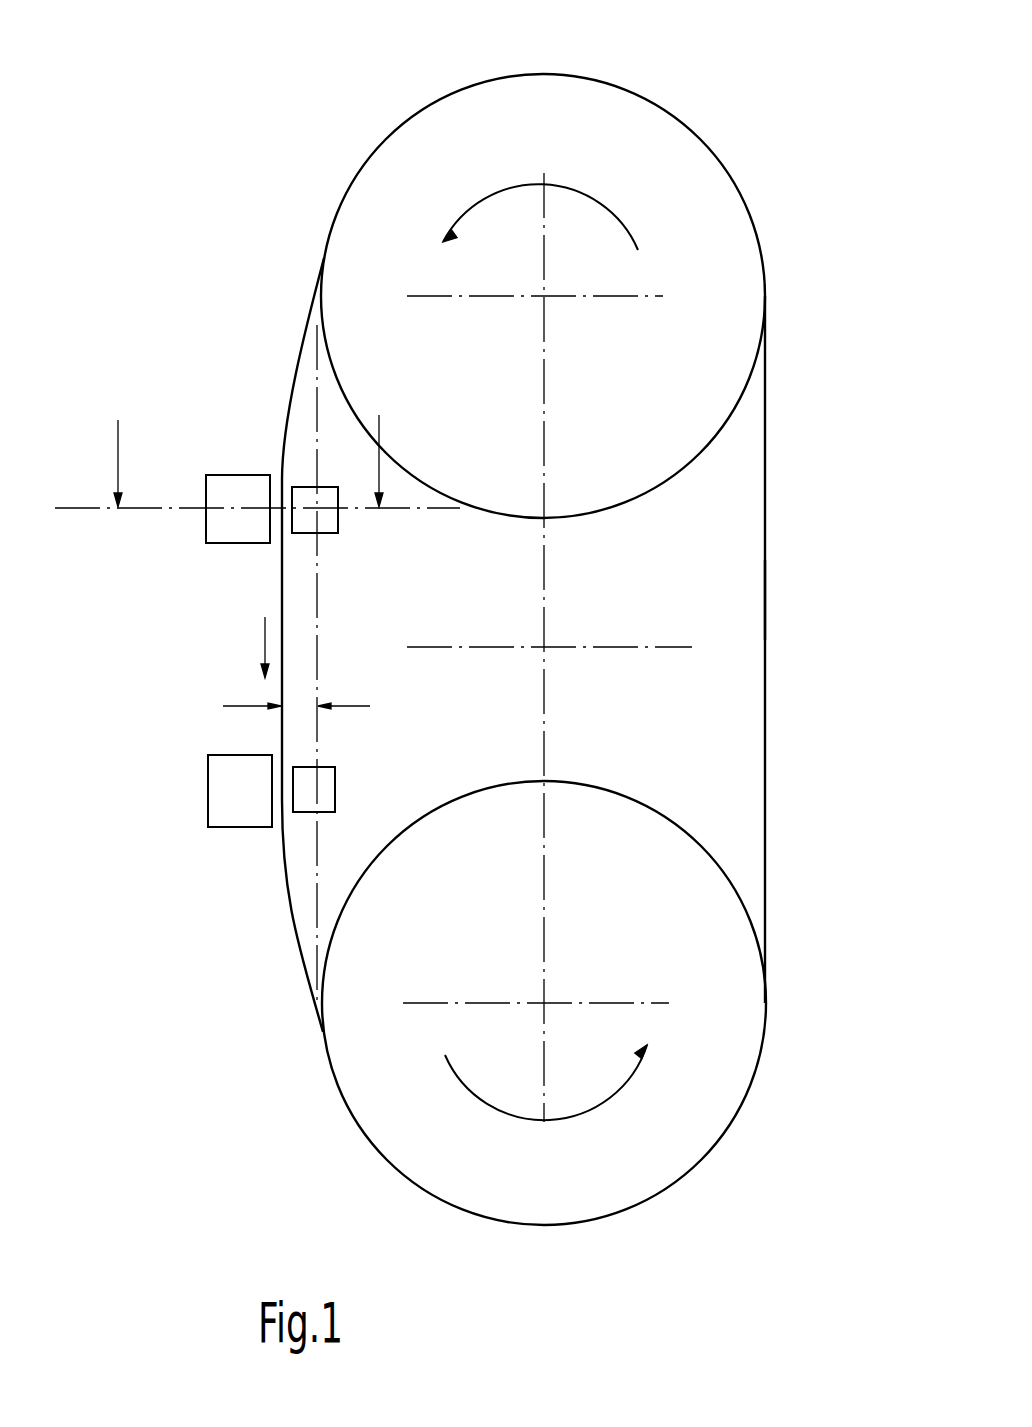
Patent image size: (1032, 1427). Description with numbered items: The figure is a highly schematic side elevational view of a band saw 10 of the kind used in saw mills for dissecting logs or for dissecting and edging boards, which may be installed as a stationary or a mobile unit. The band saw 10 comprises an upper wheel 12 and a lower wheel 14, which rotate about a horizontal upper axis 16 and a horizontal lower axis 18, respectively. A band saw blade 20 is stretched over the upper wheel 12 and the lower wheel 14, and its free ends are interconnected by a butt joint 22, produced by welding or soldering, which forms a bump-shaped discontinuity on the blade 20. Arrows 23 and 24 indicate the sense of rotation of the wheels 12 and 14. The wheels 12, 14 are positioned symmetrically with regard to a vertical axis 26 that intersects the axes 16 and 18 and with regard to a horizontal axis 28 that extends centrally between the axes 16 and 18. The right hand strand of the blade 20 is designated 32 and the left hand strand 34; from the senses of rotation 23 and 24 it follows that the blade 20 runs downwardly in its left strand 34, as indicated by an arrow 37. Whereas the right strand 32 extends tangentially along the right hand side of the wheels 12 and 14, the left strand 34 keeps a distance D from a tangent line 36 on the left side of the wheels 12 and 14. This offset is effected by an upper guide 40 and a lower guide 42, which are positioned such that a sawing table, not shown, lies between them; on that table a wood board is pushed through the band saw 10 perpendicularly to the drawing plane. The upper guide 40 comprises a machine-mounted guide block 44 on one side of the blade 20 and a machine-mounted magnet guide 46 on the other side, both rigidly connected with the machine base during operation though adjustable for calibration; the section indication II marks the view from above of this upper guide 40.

The band saw 10 is at (807, 118).
The upper wheel 12 is at (722, 226).
The lower wheel 14 is at (725, 1083).
The upper axis 16 is at (545, 298).
The lower axis 18 is at (546, 1002).
The band saw blade 20 is at (768, 795).
The butt joint 22 is at (766, 487).
The arrow indicating sense of rotation of upper wheel 23 is at (598, 203).
The arrow indicating sense of rotation of lower wheel 24 is at (501, 1103).
The vertical axis 26 is at (545, 548).
The horizontal axis 28 is at (678, 650).
The right hand strand 32 is at (766, 600).
The left hand strand 34 is at (293, 588).
The tangent line 36 is at (317, 622).
The arrow indicating running direction 37 is at (265, 642).
The upper guide 40 is at (257, 453).
The lower guide 42 is at (235, 838).
The machine-mounted guide block 44 is at (323, 520).
The machine-mounted magnet guide 46 is at (215, 527).
The distance D is at (305, 710).
The section line II is at (257, 459).